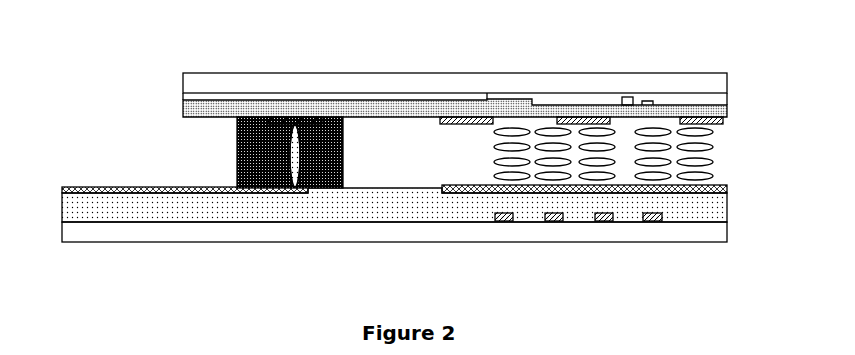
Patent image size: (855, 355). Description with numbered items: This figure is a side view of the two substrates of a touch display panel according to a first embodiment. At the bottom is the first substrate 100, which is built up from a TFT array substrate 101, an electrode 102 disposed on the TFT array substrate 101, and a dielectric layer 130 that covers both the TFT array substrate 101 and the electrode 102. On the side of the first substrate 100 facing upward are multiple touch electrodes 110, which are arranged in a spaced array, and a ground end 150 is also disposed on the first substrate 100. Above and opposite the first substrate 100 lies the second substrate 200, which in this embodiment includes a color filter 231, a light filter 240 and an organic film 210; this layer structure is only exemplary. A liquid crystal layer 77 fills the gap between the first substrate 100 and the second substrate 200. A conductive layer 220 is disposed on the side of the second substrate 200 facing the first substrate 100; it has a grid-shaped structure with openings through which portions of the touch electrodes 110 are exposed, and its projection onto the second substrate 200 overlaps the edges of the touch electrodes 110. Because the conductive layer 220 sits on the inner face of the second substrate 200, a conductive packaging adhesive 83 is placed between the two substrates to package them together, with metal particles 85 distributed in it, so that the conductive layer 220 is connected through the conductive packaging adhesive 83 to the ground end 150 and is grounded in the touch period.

The first substrate 100 is at (409, 222).
The TFT array substrate 101 is at (722, 232).
The electrode 102 is at (655, 217).
The touch electrodes 110 is at (725, 187).
The dielectric layer 130 is at (722, 212).
The ground end 150 is at (87, 192).
The second substrate 200 is at (428, 65).
The organic film 210 is at (183, 110).
The conductive layer 220 is at (458, 118).
The color filter 231 is at (570, 102).
The light filter 240 is at (497, 72).
The liquid crystal layer 77 is at (710, 148).
The conductive packaging adhesive 83 is at (238, 165).
The metal particles 85 is at (294, 147).